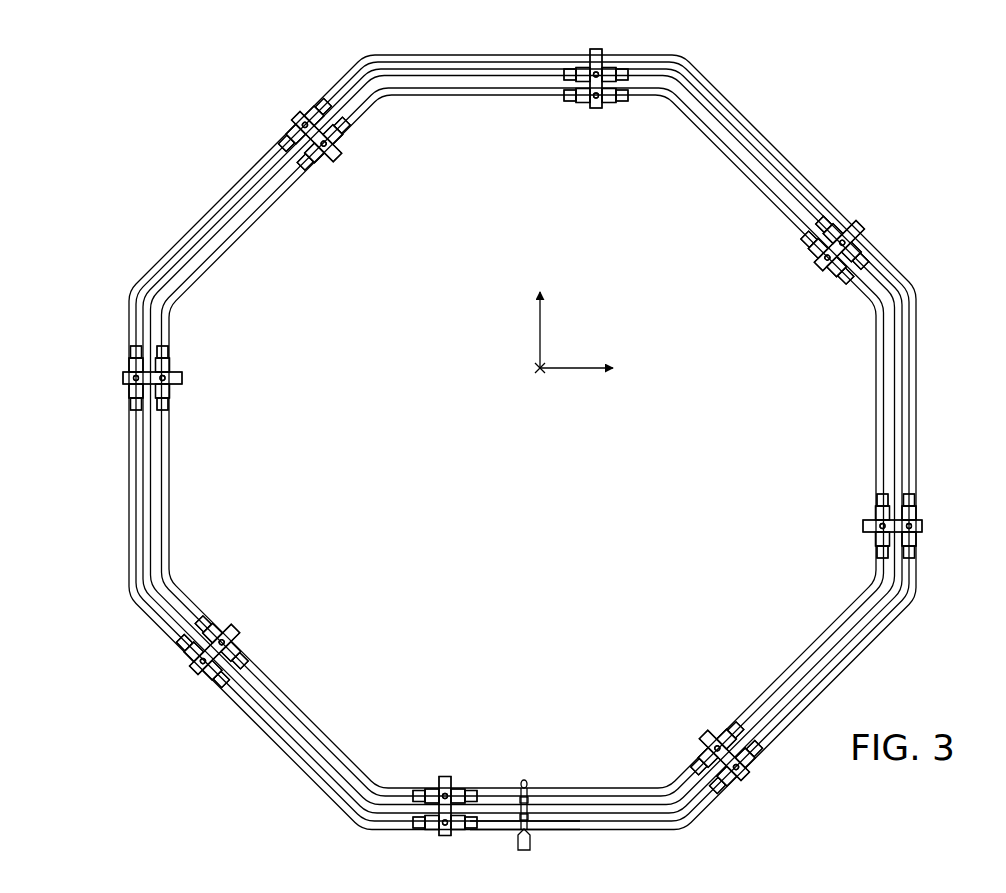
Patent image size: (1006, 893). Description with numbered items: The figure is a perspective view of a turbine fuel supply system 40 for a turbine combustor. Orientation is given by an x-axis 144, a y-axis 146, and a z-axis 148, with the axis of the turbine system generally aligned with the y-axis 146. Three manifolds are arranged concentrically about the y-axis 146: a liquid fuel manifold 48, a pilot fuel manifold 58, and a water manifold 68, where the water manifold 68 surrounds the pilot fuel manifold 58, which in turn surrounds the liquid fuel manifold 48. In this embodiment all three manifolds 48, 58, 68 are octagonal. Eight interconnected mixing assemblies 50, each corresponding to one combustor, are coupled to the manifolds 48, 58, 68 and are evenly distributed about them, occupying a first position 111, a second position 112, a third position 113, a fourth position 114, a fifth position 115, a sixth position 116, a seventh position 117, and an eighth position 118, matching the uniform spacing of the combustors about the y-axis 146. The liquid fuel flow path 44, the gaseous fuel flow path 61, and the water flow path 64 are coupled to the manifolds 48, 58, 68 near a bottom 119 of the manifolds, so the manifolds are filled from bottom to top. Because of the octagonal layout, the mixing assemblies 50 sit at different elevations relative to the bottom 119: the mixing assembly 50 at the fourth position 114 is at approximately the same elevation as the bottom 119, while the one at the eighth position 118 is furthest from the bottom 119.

The turbine fuel supply system 40 is at (522, 434).
The liquid fuel flow path 44 is at (525, 780).
The liquid fuel manifold 48 is at (243, 222).
The mixing assembly 50 is at (333, 152).
The pilot fuel manifold 58 is at (262, 158).
The gaseous fuel flow path 61 is at (529, 806).
The water flow path 64 is at (532, 845).
The water manifold 68 is at (210, 210).
The first position 111 is at (366, 141).
The second position 112 is at (197, 353).
The third position 113 is at (219, 608).
The fourth position 114 is at (424, 776).
The fifth position 115 is at (733, 744).
The sixth position 116 is at (848, 490).
The seventh position 117 is at (778, 246).
The eighth position 118 is at (577, 112).
The bottom 119 is at (512, 848).
The x-axis 144 is at (572, 378).
The y-axis 146 is at (533, 372).
The z-axis 148 is at (532, 338).